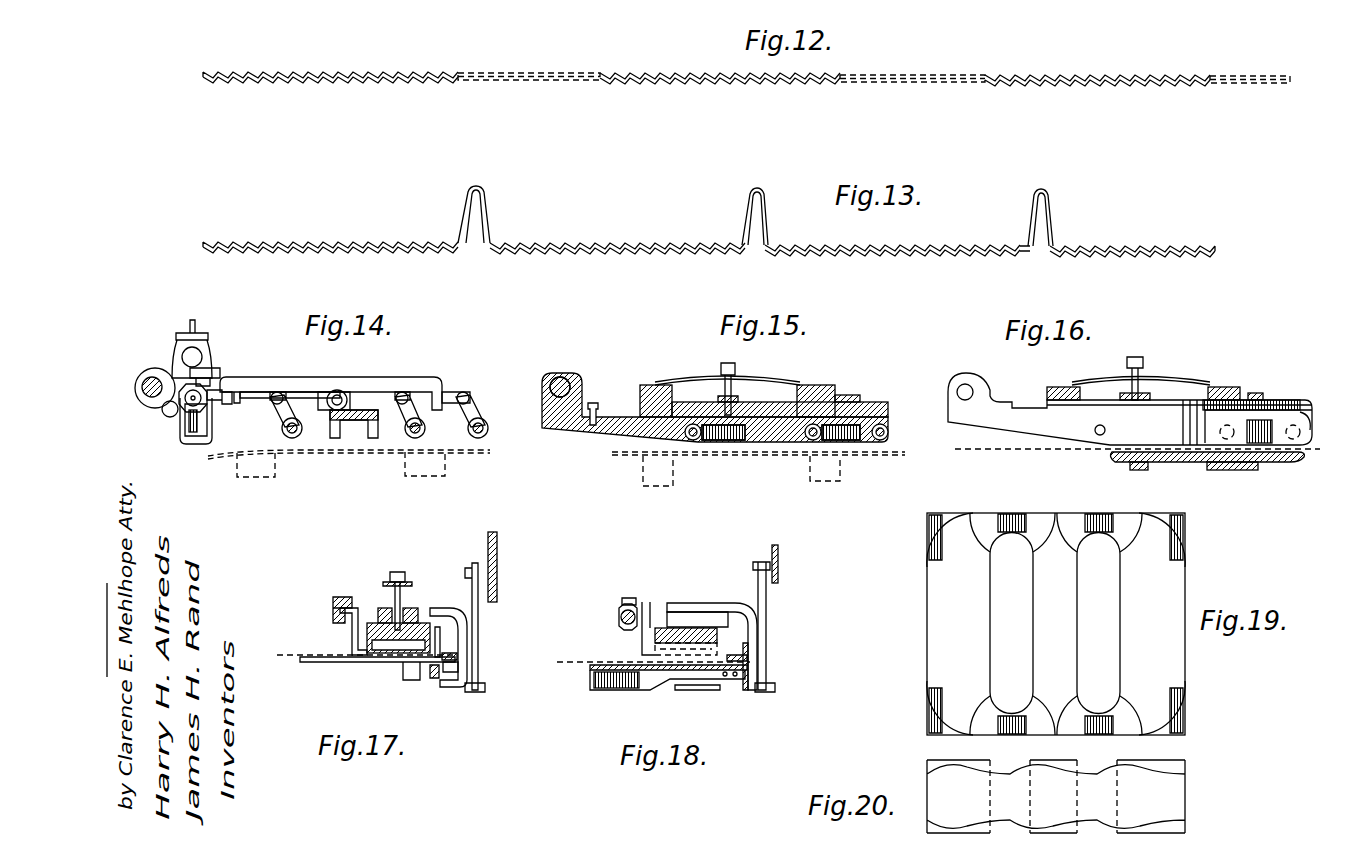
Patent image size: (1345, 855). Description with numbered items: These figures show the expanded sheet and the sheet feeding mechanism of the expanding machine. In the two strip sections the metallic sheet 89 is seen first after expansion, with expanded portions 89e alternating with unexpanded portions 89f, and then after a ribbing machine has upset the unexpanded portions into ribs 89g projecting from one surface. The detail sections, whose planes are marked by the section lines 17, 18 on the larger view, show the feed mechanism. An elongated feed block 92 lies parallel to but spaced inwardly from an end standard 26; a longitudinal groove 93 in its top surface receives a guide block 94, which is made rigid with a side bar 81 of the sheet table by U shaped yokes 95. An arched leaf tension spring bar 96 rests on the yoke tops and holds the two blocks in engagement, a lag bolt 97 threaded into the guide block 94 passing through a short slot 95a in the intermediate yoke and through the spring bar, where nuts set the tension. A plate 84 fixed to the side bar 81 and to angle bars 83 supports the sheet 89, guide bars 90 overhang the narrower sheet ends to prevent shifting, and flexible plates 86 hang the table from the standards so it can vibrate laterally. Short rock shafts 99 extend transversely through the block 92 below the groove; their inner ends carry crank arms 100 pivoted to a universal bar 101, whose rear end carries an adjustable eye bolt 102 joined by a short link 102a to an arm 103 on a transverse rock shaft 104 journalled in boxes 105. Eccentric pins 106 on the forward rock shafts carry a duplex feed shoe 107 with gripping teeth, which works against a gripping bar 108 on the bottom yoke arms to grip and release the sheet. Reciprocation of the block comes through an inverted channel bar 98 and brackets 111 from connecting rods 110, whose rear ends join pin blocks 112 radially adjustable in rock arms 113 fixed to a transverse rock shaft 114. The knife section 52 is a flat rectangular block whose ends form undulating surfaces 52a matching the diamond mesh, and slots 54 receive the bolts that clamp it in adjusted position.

In FIG. 12, the expanded portions 89e is at (358, 60).
In FIG. 13, the expanded portions 89e is at (320, 243).
In FIG. 12, the unexpanded portions 89f is at (520, 72).
In FIG. 13, the ribs 89g is at (486, 200).
In FIG. 14, the universal bar 101 is at (380, 378).
In FIG. 17, the universal bar 101 is at (333, 600).
In FIG. 18, the universal bar 101 is at (628, 600).
In FIG. 14, the rock-shaft 114 is at (182, 356).
In FIG. 14, the pin block 112 is at (208, 374).
In FIG. 14, the rock shaft 104 is at (146, 392).
In FIG. 15, the rock shaft 104 is at (552, 374).
In FIG. 16, the rock shaft 104 is at (960, 388).
In FIG. 14, the arm 103 is at (163, 414).
In FIG. 14, the eye bolt 102 is at (208, 398).
In FIG. 18, the eye bolt 102 is at (617, 617).
In FIG. 14, the link 102a is at (180, 440).
In FIG. 14, the rock arm 113 is at (196, 446).
In FIG. 14, the connecting rod 110 is at (300, 392).
In FIG. 14, the bracket 111 is at (340, 390).
In FIG. 14, the crank arm 100 is at (406, 402).
In FIG. 17, the crank arm 100 is at (352, 643).
In FIG. 18, the crank arm 100 is at (648, 602).
In FIG. 14, the rock shaft 99 is at (293, 440).
In FIG. 15, the rock shaft 99 is at (692, 442).
In FIG. 16, the rock shaft 99 is at (1097, 428).
In FIG. 14, the inverted channel bar 98 is at (362, 425).
In FIG. 14, the plate 84 is at (490, 455).
In FIG. 15, the plate 84 is at (905, 456).
In FIG. 17, the plate 84 is at (377, 674).
In FIG. 18, the plate 84 is at (592, 667).
In FIG. 14, the angle bar 83 is at (257, 478).
In FIG. 15, the angle bar 83 is at (660, 487).
In FIG. 18, the angle bar 83 is at (606, 690).
In FIG. 15, the elongated block 92 is at (622, 425).
In FIG. 16, the elongated block 92 is at (1130, 409).
In FIG. 17, the elongated block 92 is at (375, 653).
In FIG. 18, the elongated block 92 is at (728, 628).
In FIG. 15, the box 105 is at (568, 373).
In FIG. 16, the box 105 is at (985, 375).
In FIG. 15, the guide block 94 is at (692, 402).
In FIG. 17, the guide block 94 is at (415, 622).
In FIG. 18, the guide block 94 is at (702, 628).
In FIG. 15, the U shaped yoke 95 is at (652, 385).
In FIG. 16, the U shaped yoke 95 is at (1062, 387).
In FIG. 17, the U shaped yoke 95 is at (469, 624).
In FIG. 18, the U shaped yoke 95 is at (758, 624).
In FIG. 15, the slot 95a is at (735, 400).
In FIG. 15, the leaf tension spring bar 96 is at (782, 380).
In FIG. 16, the leaf tension spring bar 96 is at (1175, 380).
In FIG. 17, the leaf tension spring bar 96 is at (410, 583).
In FIG. 15, the lag bolt 97 is at (727, 362).
In FIG. 16, the lag bolt 97 is at (1130, 366).
In FIG. 17, the lag bolt 97 is at (397, 572).
In FIG. 15, the longitudinal groove 93 is at (778, 418).
In FIG. 17, the longitudinal groove 93 is at (382, 608).
In FIG. 18, the longitudinal groove 93 is at (694, 612).
In FIG. 16, the duplex feed shoe 107 is at (1260, 418).
In FIG. 17, the duplex feed shoe 107 is at (445, 625).
In FIG. 16, the eccentrically disposed pin 106 is at (1303, 400).
In FIG. 16, the gripping bar 108 is at (1275, 463).
In FIG. 17, the gripping bar 108 is at (432, 680).
In FIG. 16, the metallic sheet 89 is at (1137, 437).
In FIG. 17, the metallic sheet 89 is at (280, 660).
In FIG. 18, the metallic sheet 89 is at (650, 650).
In FIG. 16, the section line 17— 17 is at (1122, 345).
In FIG. 16, the section line 18— 18 is at (1030, 472).
In FIG. 17, the end standard 26 is at (497, 550).
In FIG. 18, the end standard 26 is at (779, 550).
In FIG. 17, the flexible plate 86 is at (479, 585).
In FIG. 18, the flexible plate 86 is at (767, 596).
In FIG. 17, the guide bar 90 is at (458, 655).
In FIG. 18, the guide bar 90 is at (750, 658).
In FIG. 17, the side bar 81 is at (452, 674).
In FIG. 18, the side bar 81 is at (746, 690).
In FIG. 19, the knife section 52 is at (926, 620).
In FIG. 20, the knife section 52 is at (925, 760).
In FIG. 19, the slot 54 is at (1090, 625).
In FIG. 20, the slot 54 is at (990, 790).
In FIG. 19, the undulating surface 52a is at (1078, 530).
In FIG. 20, the undulating surface 52a is at (1035, 830).